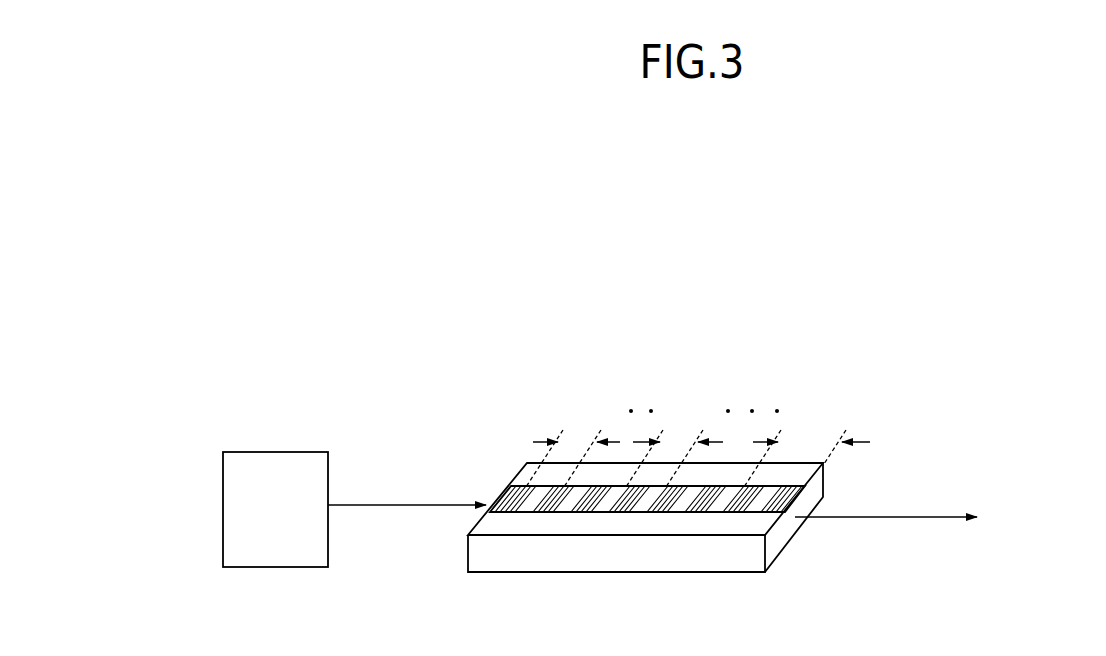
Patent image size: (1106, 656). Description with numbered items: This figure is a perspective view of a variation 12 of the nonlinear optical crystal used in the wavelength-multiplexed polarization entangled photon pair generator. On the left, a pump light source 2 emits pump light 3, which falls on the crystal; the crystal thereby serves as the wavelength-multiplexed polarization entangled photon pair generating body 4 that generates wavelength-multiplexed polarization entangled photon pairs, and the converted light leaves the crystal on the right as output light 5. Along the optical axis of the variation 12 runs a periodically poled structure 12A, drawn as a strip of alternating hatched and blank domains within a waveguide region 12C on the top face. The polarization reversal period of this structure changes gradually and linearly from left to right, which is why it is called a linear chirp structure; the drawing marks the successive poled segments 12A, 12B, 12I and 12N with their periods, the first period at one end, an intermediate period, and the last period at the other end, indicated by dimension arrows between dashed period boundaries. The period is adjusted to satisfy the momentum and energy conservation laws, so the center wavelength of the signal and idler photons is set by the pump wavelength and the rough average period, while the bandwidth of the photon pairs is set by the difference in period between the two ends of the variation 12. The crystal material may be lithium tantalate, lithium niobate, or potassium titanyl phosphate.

The pump light source 2 is at (277, 452).
The pump light 3 is at (396, 508).
The wavelength-multiplexed polarization entangled photon pair generating body 4 is at (792, 369).
The output light 5 is at (850, 519).
The variation of the nonlinear optical crystal 12 is at (682, 562).
The periodically poled structure 12A is at (505, 513).
The second periodically poled segment 12B is at (548, 502).
The optical waveguide 12C is at (516, 493).
The i-th periodically poled segment 12I is at (607, 513).
The n-th periodically poled segment 12N is at (727, 513).